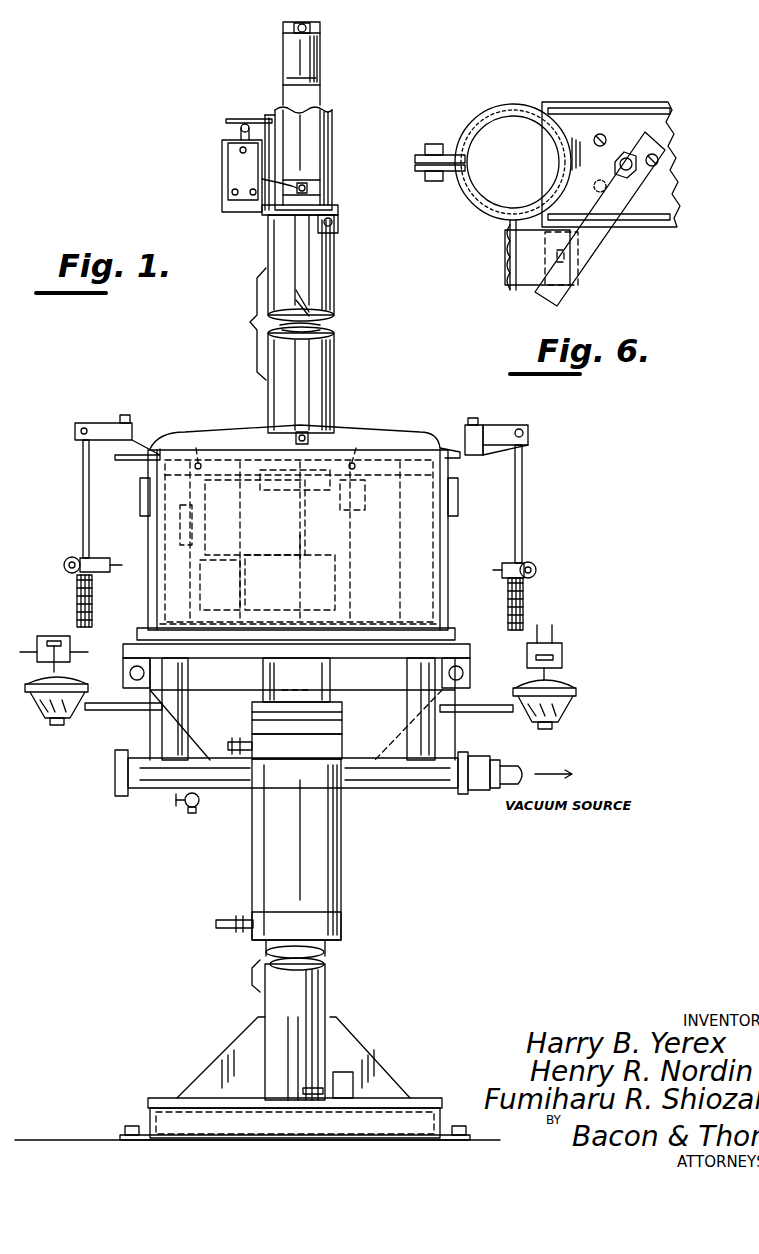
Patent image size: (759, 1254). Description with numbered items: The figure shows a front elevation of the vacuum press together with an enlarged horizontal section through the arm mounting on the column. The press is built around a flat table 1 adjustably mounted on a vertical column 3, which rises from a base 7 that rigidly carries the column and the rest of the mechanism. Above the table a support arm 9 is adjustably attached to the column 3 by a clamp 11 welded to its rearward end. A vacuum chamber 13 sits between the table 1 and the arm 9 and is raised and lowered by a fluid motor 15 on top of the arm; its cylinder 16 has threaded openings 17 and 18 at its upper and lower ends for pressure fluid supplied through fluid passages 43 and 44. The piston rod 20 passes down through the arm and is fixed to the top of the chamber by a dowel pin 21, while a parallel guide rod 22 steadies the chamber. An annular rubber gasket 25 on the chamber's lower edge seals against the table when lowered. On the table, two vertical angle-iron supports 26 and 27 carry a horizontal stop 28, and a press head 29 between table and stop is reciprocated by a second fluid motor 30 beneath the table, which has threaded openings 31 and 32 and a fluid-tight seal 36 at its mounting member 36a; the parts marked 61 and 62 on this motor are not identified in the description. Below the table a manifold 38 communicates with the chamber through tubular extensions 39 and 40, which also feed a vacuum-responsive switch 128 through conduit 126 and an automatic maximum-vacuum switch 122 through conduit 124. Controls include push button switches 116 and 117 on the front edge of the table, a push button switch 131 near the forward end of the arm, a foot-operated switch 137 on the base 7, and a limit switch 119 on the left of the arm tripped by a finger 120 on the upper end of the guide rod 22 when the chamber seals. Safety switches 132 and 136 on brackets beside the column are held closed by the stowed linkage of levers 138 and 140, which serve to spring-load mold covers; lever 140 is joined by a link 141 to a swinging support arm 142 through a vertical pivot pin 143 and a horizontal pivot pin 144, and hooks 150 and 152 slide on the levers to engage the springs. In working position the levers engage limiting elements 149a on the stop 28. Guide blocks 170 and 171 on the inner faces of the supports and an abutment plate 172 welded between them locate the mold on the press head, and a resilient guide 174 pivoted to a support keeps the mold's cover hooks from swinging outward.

In FIG. 1, the table 1 is at (472, 646).
In FIG. 1, the vertical column 3 is at (320, 250).
In FIG. 6, the vertical column 3 is at (498, 124).
In FIG. 1, the base 7 is at (340, 1142).
In FIG. 6, the support arm 9 is at (576, 106).
In FIG. 6, the clamp 11 is at (450, 144).
In FIG. 1, the vacuum chamber 13 is at (448, 543).
In FIG. 1, the fluid motor 15 is at (318, 53).
In FIG. 1, the cylinder 16 is at (322, 104).
In FIG. 1, the threaded opening 17 is at (308, 20).
In FIG. 1, the threaded opening 18 is at (302, 183).
In FIG. 1, the piston rod 20 is at (297, 266).
In FIG. 1, the dowel pin 21 is at (296, 436).
In FIG. 1, the guide rod 22 is at (318, 328).
In FIG. 6, the guide rod 22 is at (627, 157).
In FIG. 1, the annular rubber gasket 25 is at (446, 632).
In FIG. 1, the angle-iron support 26 is at (252, 494).
In FIG. 1, the angle-iron support 27 is at (330, 515).
In FIG. 1, the stop 28 is at (330, 478).
In FIG. 1, the press head 29 is at (302, 622).
In FIG. 1, the fluid motor 30 is at (305, 840).
In FIG. 1, the threaded opening 31 is at (268, 744).
In FIG. 1, the threaded opening 32 is at (272, 916).
In FIG. 1, the fluid-tight seal 36 is at (336, 702).
In FIG. 1, the motor mounting member 36a is at (262, 680).
In FIG. 1, the manifold 38 is at (380, 782).
In FIG. 1, the tubular extension 39 is at (414, 730).
In FIG. 1, the tubular extension 40 is at (165, 748).
In FIG. 1, the fluid passage 43 is at (264, 177).
In FIG. 1, the fluid passage 44 is at (298, 27).
In FIG. 1, the fitting 61 is at (230, 918).
In FIG. 1, the fitting 62 is at (235, 742).
In FIG. 1, the push button switch 116 is at (126, 680).
In FIG. 1, the push button switch 117 is at (470, 684).
In FIG. 1, the limit switch 119 is at (228, 147).
In FIG. 6, the limit switch 119 is at (580, 278).
In FIG. 1, the finger 120 is at (248, 117).
In FIG. 6, the finger 120 is at (592, 236).
In FIG. 1, the automatic switch 122 is at (54, 636).
In FIG. 1, the conduit 124 is at (95, 710).
In FIG. 1, the conduit 126 is at (468, 716).
In FIG. 1, the switch 128 is at (562, 665).
In FIG. 1, the push button switch 131 is at (332, 222).
In FIG. 1, the safety switch 132 is at (144, 493).
In FIG. 1, the safety switch 136 is at (458, 486).
In FIG. 1, the switch 137 is at (348, 1072).
In FIG. 1, the lever 138 is at (82, 520).
In FIG. 1, the lever 140 is at (522, 454).
In FIG. 1, the link 141 is at (502, 430).
In FIG. 1, the swinging support arm 142 is at (465, 444).
In FIG. 1, the pivot pin 143 is at (468, 418).
In FIG. 1, the pivot pin 144 is at (523, 430).
In FIG. 1, the limiting elements 149a is at (198, 448).
In FIG. 1, the hook 150 is at (124, 564).
In FIG. 1, the hook 152 is at (490, 568).
In FIG. 1, the guide block 170 is at (245, 586).
In FIG. 1, the guide block 171 is at (268, 585).
In FIG. 1, the abutment plate 172 is at (303, 540).
In FIG. 1, the resilient guide 174 is at (166, 440).